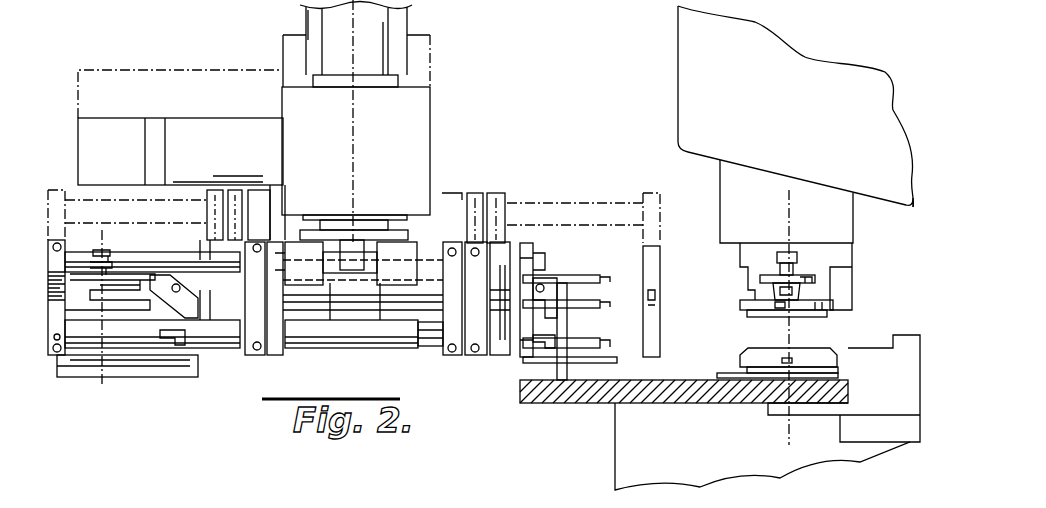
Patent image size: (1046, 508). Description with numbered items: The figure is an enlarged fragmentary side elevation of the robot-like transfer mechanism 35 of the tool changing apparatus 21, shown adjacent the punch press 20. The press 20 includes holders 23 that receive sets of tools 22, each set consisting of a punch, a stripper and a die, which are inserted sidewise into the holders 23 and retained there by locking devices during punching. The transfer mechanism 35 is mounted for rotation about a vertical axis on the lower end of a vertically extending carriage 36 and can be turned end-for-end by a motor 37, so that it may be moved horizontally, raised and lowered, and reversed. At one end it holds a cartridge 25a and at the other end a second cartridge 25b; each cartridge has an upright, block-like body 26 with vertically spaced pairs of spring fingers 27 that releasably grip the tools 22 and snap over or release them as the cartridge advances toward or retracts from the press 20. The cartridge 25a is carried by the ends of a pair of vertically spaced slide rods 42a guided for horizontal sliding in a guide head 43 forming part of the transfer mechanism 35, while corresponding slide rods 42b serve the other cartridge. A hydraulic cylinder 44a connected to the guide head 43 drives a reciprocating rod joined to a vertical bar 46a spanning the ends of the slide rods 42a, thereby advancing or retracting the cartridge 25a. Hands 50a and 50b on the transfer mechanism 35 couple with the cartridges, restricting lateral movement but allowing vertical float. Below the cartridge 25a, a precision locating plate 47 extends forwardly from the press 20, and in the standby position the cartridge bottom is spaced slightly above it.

The punch press 20 is at (730, 190).
The tool changing apparatus 21 is at (420, 18).
The tools 22 is at (68, 308).
The holders 23 is at (830, 258).
The cartridge 25a is at (522, 377).
The second cartridge 25b is at (170, 377).
The body 26 is at (550, 380).
The spring fingers 27 is at (607, 305).
The transfer mechanism 35 is at (450, 240).
The carriage 36 is at (305, 25).
The motor 37 is at (225, 125).
The slide rods 42a is at (345, 250).
The slide rods 42b is at (625, 258).
The guide head 43 is at (397, 250).
The hydraulic cylinder 44a is at (340, 310).
The vertical bar 46a is at (455, 350).
The locating plate 47 is at (612, 412).
The hand 50a is at (548, 282).
The hand 50b is at (185, 303).